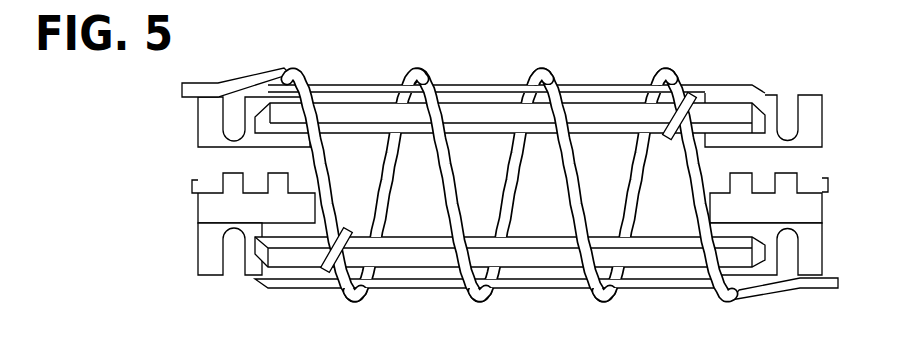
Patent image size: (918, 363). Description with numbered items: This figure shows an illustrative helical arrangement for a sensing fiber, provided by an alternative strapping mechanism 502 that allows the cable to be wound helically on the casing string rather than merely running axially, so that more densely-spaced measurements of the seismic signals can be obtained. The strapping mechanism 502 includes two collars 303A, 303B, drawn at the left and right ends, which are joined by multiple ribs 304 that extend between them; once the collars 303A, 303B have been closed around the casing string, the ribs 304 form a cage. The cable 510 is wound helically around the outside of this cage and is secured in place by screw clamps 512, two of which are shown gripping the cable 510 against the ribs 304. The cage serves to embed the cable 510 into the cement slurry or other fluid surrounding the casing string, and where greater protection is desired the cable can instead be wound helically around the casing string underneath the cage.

The strapping mechanism 502 is at (460, 189).
The cable 510 is at (297, 69).
The ribs 304 is at (456, 85).
The screw clamps 512 is at (344, 232).
The collar 303A is at (317, 304).
The collar 303B is at (823, 304).